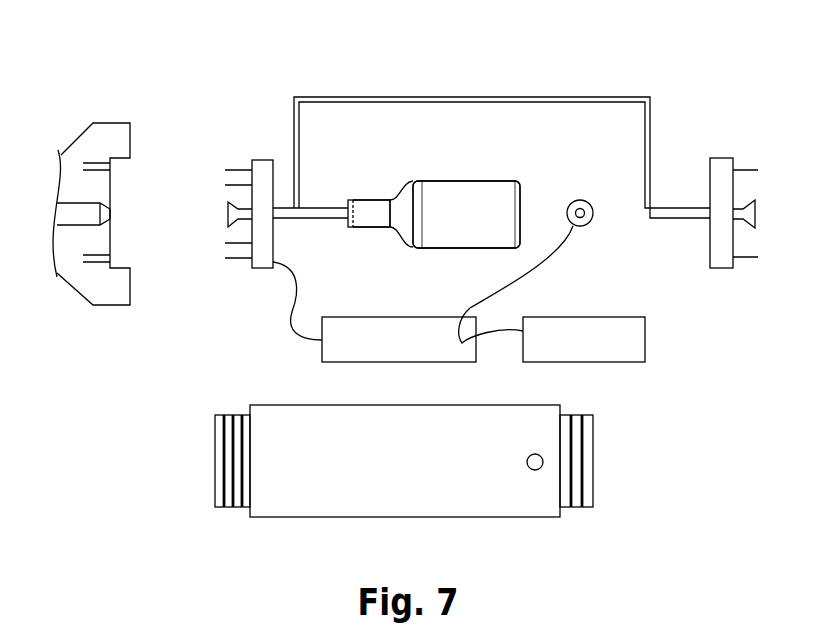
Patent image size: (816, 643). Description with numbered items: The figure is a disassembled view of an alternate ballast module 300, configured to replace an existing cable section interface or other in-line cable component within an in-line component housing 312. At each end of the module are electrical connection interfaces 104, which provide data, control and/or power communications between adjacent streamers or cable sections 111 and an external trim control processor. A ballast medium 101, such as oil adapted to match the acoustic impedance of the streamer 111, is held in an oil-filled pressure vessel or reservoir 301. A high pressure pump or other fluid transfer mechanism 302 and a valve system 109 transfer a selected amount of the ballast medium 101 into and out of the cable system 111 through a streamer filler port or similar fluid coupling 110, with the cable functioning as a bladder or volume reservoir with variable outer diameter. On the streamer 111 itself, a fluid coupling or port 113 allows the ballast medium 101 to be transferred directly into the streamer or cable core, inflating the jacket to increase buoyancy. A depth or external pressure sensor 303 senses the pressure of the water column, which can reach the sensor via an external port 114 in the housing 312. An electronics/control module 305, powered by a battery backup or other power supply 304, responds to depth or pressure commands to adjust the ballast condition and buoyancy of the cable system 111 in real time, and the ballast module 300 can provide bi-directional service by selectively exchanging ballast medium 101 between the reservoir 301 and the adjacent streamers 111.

The ballast module 300 is at (593, 62).
The electrical connection interface 104 is at (211, 167).
The streamer filler port 110 is at (318, 193).
The valve system 109 is at (370, 207).
The high pressure pump 302 is at (361, 227).
The oil-filled pressure vessel 301 is at (447, 187).
The ballast medium 101 is at (485, 205).
The external pressure sensor 303 is at (580, 197).
The electronics/control module 305 is at (400, 324).
The battery backup 304 is at (585, 324).
The streamer 111 is at (117, 310).
The fluid coupling 113 is at (85, 207).
The in-line component housing 312 is at (320, 507).
The external port 114 is at (532, 470).